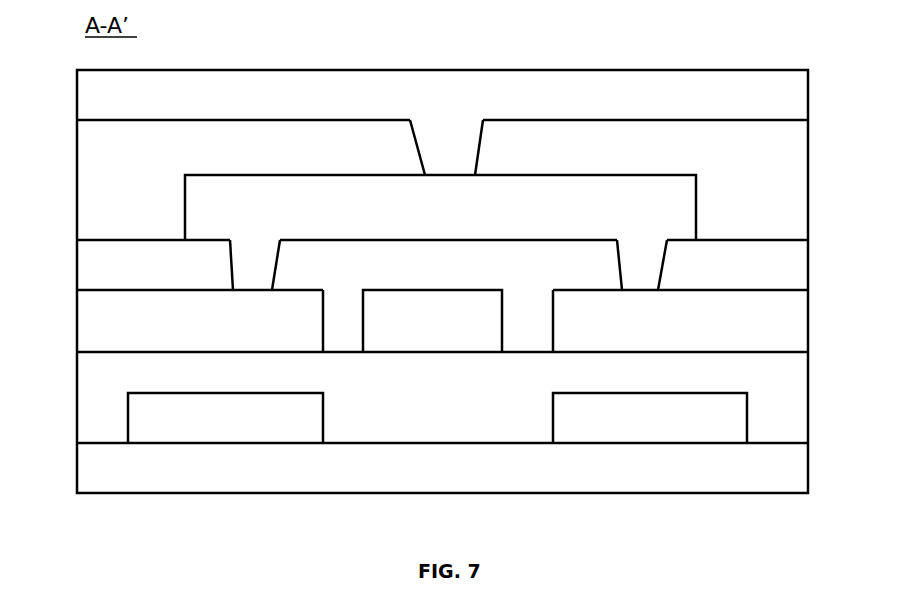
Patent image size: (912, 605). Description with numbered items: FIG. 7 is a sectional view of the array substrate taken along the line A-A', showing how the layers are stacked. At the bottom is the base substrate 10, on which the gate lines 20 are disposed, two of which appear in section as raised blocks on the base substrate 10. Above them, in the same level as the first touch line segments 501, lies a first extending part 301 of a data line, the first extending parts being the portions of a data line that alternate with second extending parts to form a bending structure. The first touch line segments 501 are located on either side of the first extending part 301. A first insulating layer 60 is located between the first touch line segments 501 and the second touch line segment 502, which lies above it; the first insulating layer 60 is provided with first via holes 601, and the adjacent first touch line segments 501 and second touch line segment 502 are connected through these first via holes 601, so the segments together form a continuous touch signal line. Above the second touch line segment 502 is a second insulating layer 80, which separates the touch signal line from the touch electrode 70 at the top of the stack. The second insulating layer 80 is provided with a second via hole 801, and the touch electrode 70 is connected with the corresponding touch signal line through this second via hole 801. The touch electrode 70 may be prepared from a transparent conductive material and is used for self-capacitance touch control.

The base substrate 10 is at (800, 472).
The gate line 20 is at (258, 438).
The first extending part 301 is at (427, 343).
The first touch line segment 501 is at (800, 325).
The second touch line segment 502 is at (692, 195).
The first insulating layer 60 is at (798, 263).
The first via hole 601 is at (228, 283).
The touch electrode 70 is at (798, 90).
The second insulating layer 80 is at (798, 150).
The second via hole 801 is at (478, 158).